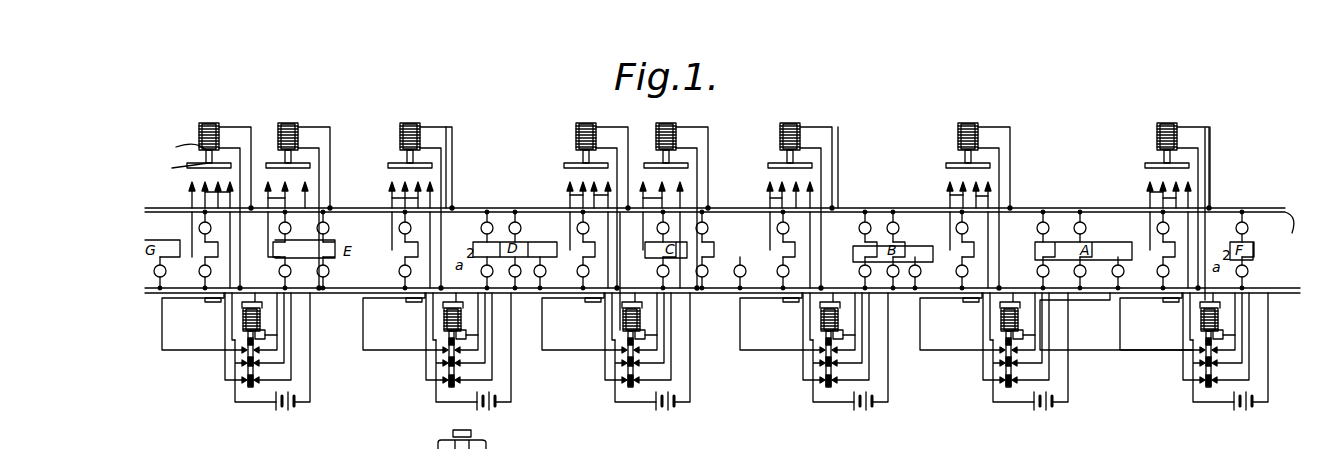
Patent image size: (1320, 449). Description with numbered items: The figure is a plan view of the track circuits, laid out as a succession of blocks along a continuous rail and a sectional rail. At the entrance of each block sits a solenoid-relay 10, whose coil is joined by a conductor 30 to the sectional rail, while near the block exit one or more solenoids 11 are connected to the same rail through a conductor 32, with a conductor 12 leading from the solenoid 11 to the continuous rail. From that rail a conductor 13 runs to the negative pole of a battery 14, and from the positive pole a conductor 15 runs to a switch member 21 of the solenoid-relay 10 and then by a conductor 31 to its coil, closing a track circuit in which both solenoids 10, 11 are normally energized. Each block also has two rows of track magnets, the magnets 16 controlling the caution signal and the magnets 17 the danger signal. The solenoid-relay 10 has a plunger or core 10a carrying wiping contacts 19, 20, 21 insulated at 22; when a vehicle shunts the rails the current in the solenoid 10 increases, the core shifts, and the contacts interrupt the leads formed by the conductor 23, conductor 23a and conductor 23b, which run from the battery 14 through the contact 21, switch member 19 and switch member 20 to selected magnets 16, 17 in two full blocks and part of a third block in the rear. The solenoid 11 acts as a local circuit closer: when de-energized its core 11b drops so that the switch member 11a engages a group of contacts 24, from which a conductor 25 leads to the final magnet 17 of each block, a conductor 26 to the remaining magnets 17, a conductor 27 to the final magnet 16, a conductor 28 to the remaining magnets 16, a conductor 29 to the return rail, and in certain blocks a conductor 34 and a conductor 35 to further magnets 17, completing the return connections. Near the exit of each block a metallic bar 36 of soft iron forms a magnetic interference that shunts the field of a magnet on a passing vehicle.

The solenoid-relay 10 is at (262, 318).
The plunger or core 10a is at (645, 312).
The solenoid 11 is at (199, 124).
The switch member 11a is at (1276, 132).
The core 11b is at (1230, 140).
The conductor 12 is at (697, 180).
The conductor 13 is at (690, 335).
The battery 14 is at (278, 410).
The conductor 15 is at (436, 400).
The track magnets 16 is at (330, 222).
The track magnets 17 is at (279, 271).
The wiping contact 19 is at (650, 380).
The wiping contact 20 is at (650, 366).
The switch member 21 is at (650, 352).
The insulation 22 is at (615, 364).
The conductor 23 is at (436, 345).
The conductor 23a is at (386, 390).
The conductor 23b is at (690, 348).
The contacts 24 is at (575, 182).
The conductor 25 is at (425, 230).
The conductor 26 is at (625, 190).
The conductor 27 is at (400, 191).
The conductor 28 is at (420, 196).
The conductor 29 is at (420, 188).
The conductor 30 is at (625, 300).
The conductor 31 is at (466, 331).
The conductor 32 is at (448, 150).
The conductor 34 is at (385, 238).
The conductor 35 is at (285, 222).
The metallic bar 36 is at (235, 350).